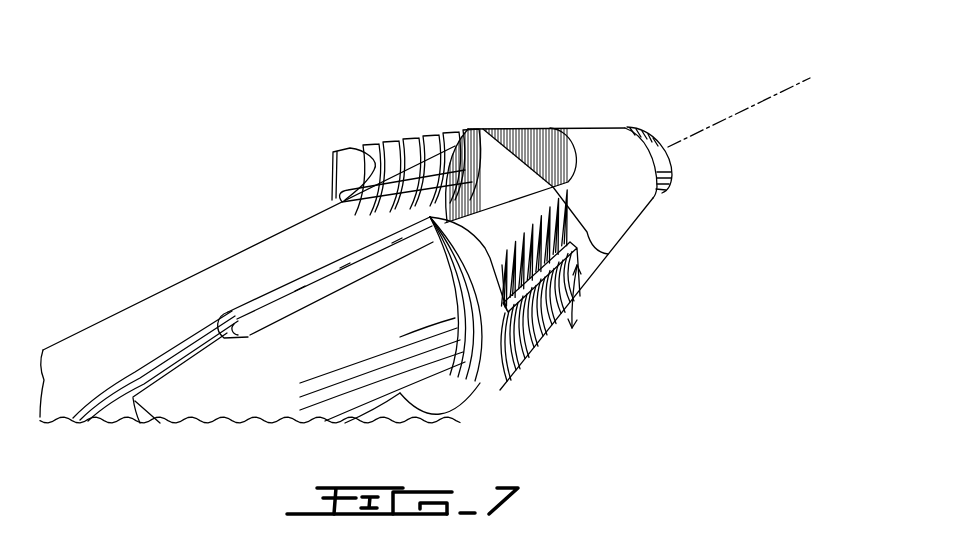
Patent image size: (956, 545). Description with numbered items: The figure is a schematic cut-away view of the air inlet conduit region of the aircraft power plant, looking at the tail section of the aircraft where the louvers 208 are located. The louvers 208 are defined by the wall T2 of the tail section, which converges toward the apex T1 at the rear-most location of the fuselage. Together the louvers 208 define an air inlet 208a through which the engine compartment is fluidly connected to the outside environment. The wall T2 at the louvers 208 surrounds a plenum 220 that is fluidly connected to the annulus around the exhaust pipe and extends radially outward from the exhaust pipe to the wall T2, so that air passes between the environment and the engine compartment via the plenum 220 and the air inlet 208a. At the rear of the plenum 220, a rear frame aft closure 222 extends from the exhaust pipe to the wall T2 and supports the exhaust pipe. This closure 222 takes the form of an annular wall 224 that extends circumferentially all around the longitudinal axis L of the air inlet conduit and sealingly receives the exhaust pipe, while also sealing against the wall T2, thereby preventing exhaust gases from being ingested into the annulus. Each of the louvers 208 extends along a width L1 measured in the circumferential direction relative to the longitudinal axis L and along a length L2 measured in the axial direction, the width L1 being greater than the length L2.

The louvers 208 is at (548, 362).
The air inlet 208a is at (347, 203).
The plenum 220 is at (437, 183).
The rear frame aft closure 222 is at (535, 157).
The annular wall 224 is at (522, 181).
The apex T1 is at (682, 181).
The wall T2 is at (614, 205).
The width L1 is at (582, 297).
The length L2 is at (572, 246).
The longitudinal axis L is at (747, 107).